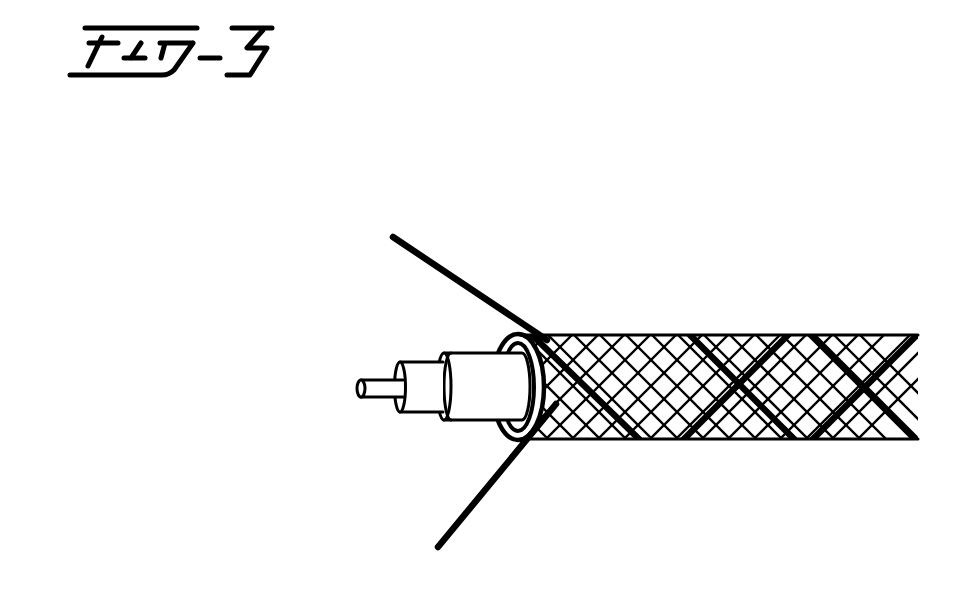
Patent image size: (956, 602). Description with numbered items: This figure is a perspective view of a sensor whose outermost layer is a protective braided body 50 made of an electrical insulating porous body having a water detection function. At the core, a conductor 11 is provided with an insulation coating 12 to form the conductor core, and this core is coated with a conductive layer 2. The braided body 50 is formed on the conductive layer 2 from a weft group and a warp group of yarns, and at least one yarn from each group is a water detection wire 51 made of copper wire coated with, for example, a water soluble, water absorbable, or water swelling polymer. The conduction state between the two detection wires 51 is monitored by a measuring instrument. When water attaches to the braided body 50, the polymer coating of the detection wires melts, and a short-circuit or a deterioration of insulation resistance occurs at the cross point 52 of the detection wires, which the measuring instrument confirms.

The conductive layer 2 is at (468, 367).
The conductor 11 is at (382, 398).
The insulation coating 12 is at (430, 402).
The braided body 50 is at (698, 397).
The water detection wire 51 is at (407, 255).
The cross point 52 is at (740, 384).